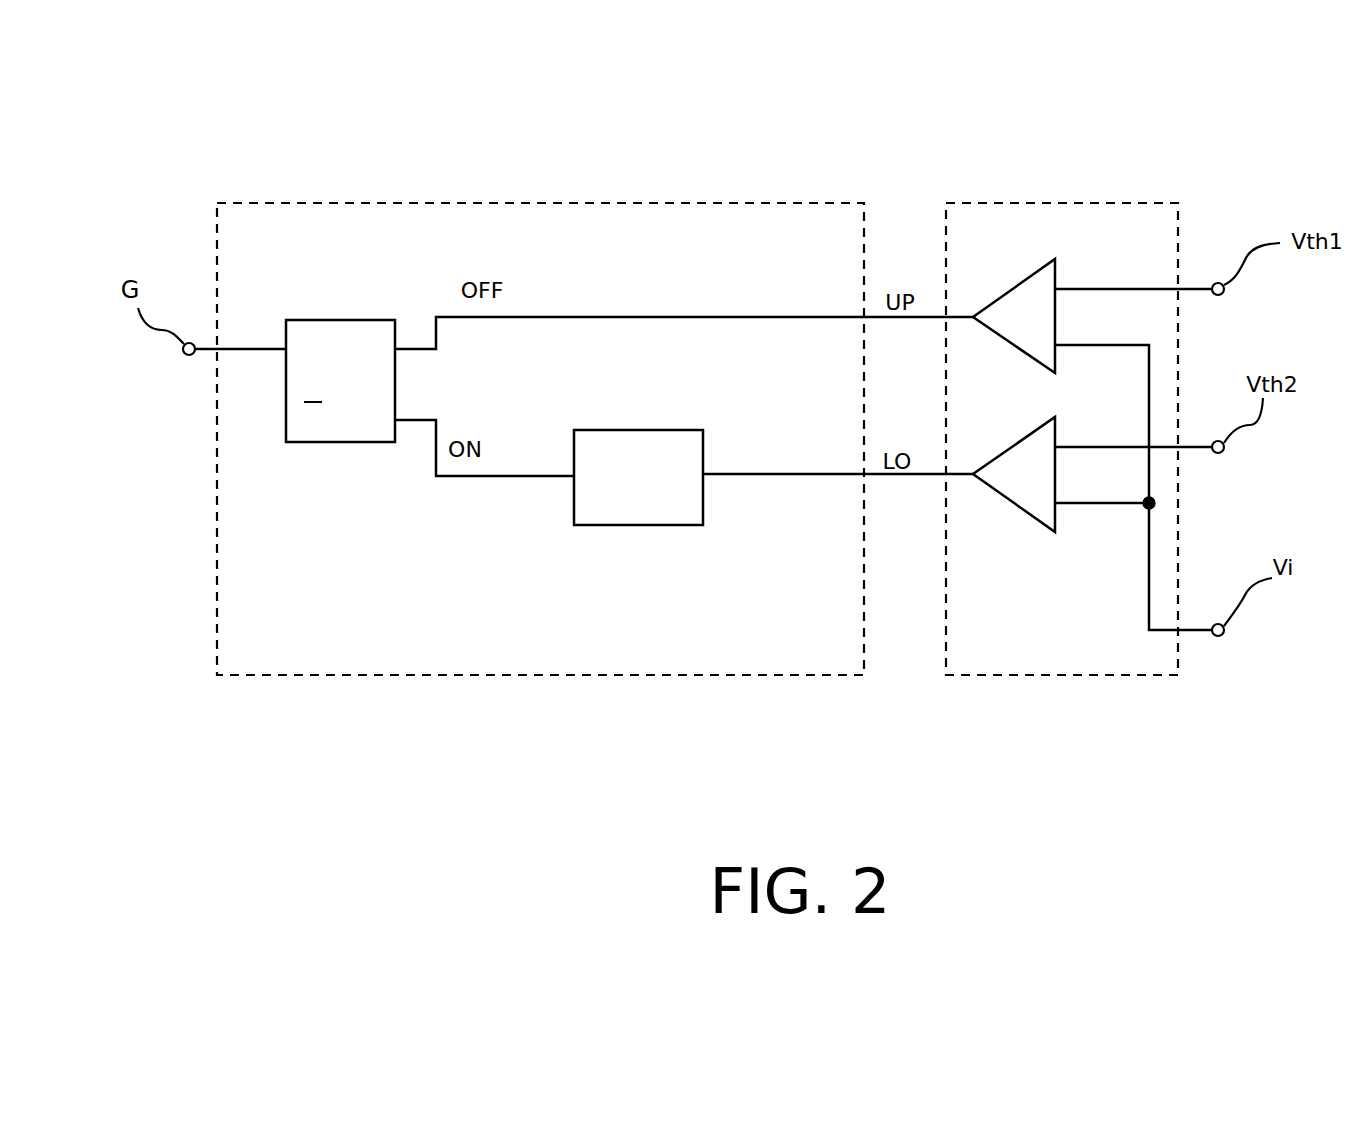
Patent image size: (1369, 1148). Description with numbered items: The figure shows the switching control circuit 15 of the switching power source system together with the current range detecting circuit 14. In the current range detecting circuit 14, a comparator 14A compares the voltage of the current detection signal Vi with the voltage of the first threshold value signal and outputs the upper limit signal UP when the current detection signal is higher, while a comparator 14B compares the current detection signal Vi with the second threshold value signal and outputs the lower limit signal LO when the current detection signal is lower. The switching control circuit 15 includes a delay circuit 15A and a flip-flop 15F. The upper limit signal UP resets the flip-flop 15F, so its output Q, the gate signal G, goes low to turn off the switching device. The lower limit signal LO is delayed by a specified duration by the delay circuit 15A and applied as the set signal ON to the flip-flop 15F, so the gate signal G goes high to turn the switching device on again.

The current range detecting circuit 14 is at (1163, 675).
The comparator 14A is at (1028, 308).
The comparator 14B is at (1021, 485).
The switching control circuit 15 is at (529, 692).
The delay circuit 15A is at (676, 527).
The flip-flop 15F is at (297, 443).